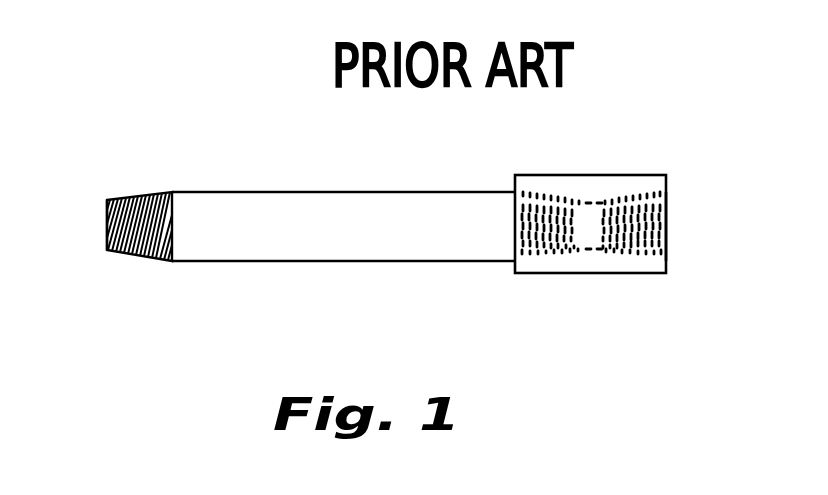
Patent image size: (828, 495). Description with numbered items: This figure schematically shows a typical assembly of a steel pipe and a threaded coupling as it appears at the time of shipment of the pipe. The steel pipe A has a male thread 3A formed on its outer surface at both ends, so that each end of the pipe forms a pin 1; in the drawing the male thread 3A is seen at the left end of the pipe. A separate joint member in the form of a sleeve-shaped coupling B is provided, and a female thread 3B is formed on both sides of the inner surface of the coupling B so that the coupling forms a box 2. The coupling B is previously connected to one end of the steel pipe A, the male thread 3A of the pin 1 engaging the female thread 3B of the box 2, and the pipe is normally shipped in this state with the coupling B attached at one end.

The pin 1 is at (134, 192).
The male thread 3A is at (108, 212).
The steel pipe A is at (249, 192).
The coupling B is at (559, 175).
The box 2 is at (599, 187).
The female thread 3B is at (625, 227).